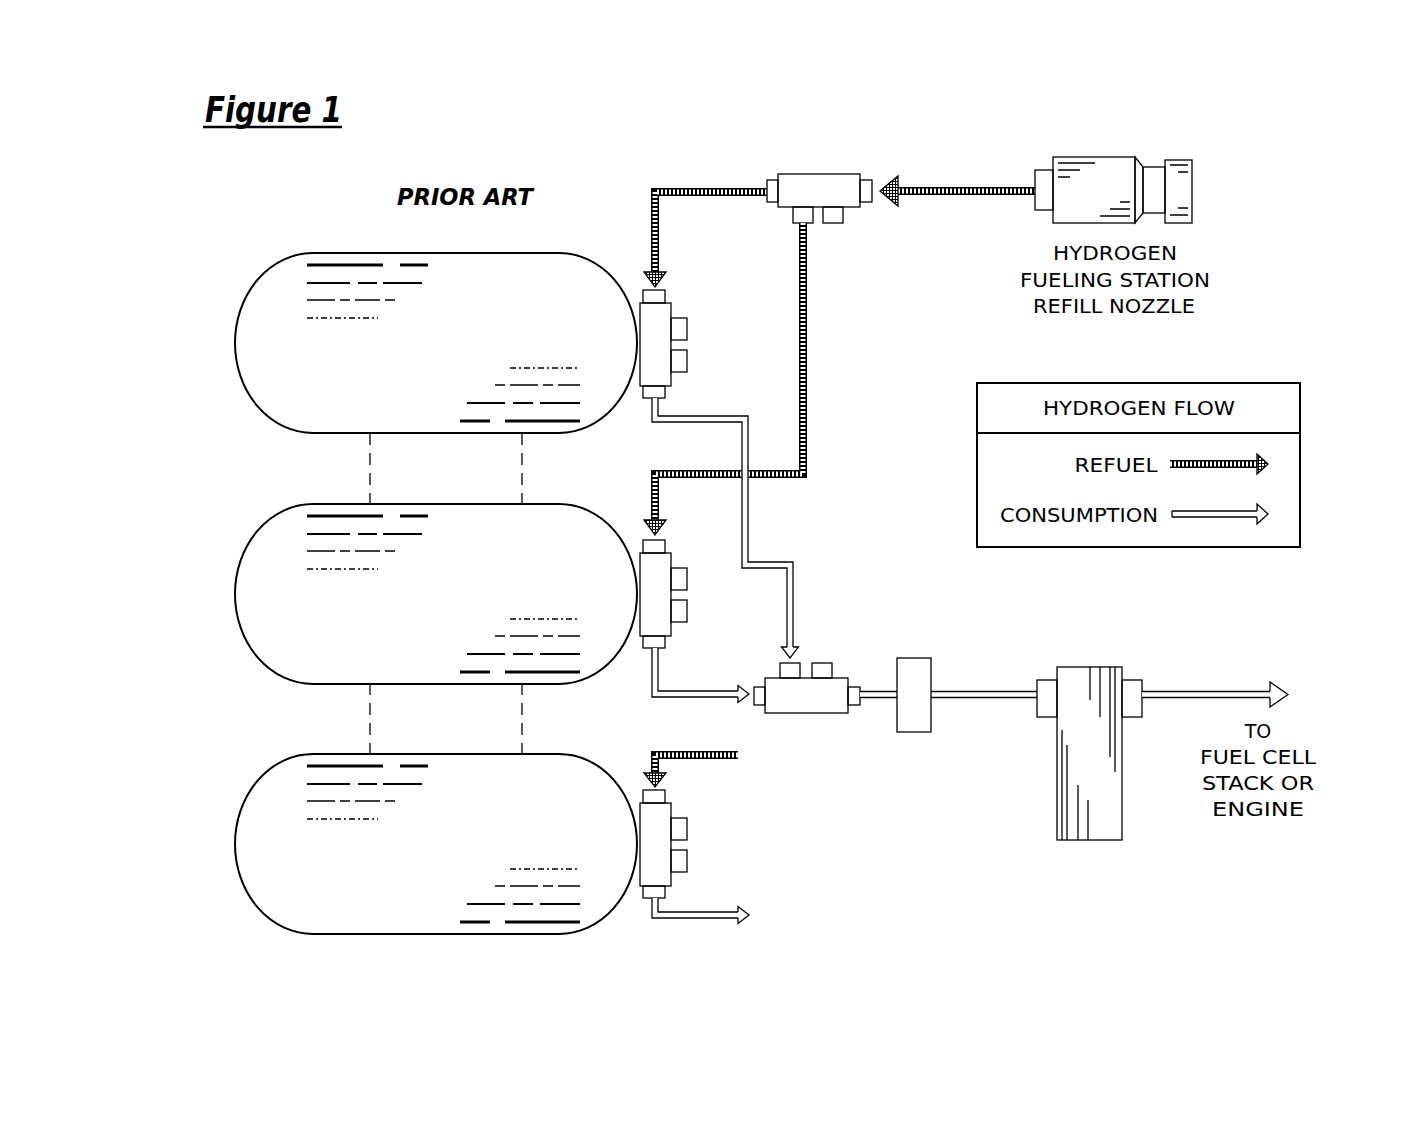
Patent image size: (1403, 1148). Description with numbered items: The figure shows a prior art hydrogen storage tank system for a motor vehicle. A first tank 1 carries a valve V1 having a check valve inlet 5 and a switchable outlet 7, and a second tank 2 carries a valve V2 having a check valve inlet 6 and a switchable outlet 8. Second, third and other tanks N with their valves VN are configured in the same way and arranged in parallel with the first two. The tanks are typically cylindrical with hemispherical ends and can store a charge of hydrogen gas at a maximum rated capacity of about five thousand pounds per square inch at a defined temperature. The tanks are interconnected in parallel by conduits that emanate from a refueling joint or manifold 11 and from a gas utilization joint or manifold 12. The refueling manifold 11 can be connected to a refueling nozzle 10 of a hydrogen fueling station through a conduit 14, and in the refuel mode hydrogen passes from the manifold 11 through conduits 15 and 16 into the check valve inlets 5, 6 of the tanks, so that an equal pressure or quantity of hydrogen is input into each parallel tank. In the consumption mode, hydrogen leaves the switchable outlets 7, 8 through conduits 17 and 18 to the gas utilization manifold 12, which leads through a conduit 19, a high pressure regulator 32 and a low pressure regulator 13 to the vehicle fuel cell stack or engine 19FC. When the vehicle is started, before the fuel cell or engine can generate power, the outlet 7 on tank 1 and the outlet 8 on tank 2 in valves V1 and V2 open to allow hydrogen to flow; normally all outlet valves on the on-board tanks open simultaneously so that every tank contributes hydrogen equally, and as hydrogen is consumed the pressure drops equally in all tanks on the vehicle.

The first tank 1 is at (262, 281).
The second tank 2 is at (262, 532).
The other tanks N is at (262, 782).
The check valve inlet 5 is at (665, 296).
The check valve inlet 6 is at (665, 546).
The switchable outlet 7 is at (665, 390).
The switchable outlet 8 is at (665, 638).
The valve V1 is at (672, 344).
The valve V2 is at (672, 591).
The valves VN is at (672, 845).
The refueling nozzle 10 is at (1094, 157).
The refueling joint or manifold 11 is at (818, 174).
The gas utilization joint or manifold 12 is at (807, 713).
The low pressure regulator 13 is at (1057, 785).
The conduit 14 is at (968, 198).
The conduit 15 is at (703, 188).
The conduit 16 is at (808, 350).
The conduit 17 is at (749, 522).
The conduit 18 is at (656, 696).
The conduit 19 is at (979, 691).
The vehicle fuel cell stack or engine 19FC is at (1185, 691).
The high pressure regulator 32 is at (914, 732).